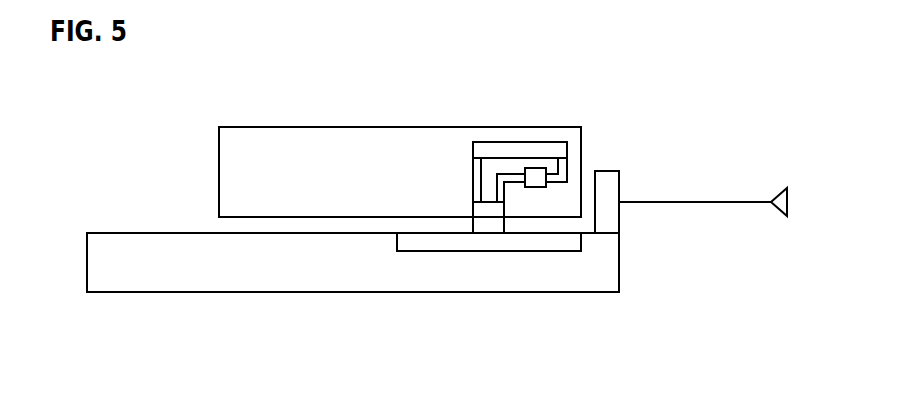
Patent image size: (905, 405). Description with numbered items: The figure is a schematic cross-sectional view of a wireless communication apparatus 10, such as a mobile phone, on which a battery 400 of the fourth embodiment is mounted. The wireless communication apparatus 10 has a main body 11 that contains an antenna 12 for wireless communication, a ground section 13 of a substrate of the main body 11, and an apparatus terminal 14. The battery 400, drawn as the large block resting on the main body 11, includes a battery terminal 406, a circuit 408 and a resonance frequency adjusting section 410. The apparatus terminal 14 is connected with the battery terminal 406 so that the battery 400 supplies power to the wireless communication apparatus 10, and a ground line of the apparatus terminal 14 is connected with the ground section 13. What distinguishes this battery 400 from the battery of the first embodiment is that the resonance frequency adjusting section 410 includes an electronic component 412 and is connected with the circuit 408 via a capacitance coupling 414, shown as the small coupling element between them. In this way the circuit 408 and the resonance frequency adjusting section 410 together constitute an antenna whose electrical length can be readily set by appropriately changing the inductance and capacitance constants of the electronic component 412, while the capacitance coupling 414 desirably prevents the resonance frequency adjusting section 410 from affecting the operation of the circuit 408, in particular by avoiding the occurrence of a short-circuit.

The battery 400 is at (370, 108).
The battery terminal 406 is at (473, 212).
The circuit 408 is at (493, 147).
The resonance frequency adjusting section 410 is at (505, 183).
The sensor element 412 is at (539, 170).
The capacitance coupling 414 is at (567, 167).
The wireless communication apparatus 10 is at (619, 304).
The main body 11 is at (360, 293).
The antenna 12 is at (712, 200).
The ground section 13 is at (423, 252).
The apparatus terminal 14 is at (495, 227).